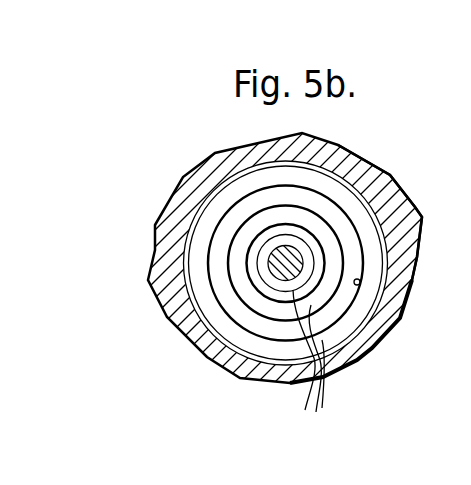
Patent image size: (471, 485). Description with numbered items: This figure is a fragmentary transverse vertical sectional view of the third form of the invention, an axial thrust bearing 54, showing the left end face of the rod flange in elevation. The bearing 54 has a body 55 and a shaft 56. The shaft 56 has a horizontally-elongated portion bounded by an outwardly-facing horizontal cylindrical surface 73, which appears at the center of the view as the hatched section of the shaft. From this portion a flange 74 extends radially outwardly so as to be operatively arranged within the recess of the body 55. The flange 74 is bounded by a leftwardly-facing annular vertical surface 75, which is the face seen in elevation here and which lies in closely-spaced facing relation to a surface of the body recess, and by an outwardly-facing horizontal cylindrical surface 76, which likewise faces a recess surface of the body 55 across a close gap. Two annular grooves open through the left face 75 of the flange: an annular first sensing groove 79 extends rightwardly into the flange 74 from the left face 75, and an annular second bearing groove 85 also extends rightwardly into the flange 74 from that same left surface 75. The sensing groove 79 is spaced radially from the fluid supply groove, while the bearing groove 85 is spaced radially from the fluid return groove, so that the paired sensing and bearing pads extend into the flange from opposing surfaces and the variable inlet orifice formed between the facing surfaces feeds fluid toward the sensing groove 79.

The axial thrust bearing 54 is at (186, 168).
The body 55 is at (396, 172).
The shaft 56 is at (273, 289).
The outwardly-facing horizontal cylindrical surface 73 is at (268, 262).
The flange 74 is at (338, 172).
The leftwardly-facing annular vertical surface 75 is at (321, 355).
The outwardly-facing horizontal cylindrical surface 76 is at (372, 350).
The first sensing groove 79 is at (324, 235).
The second bearing groove 85 is at (360, 283).